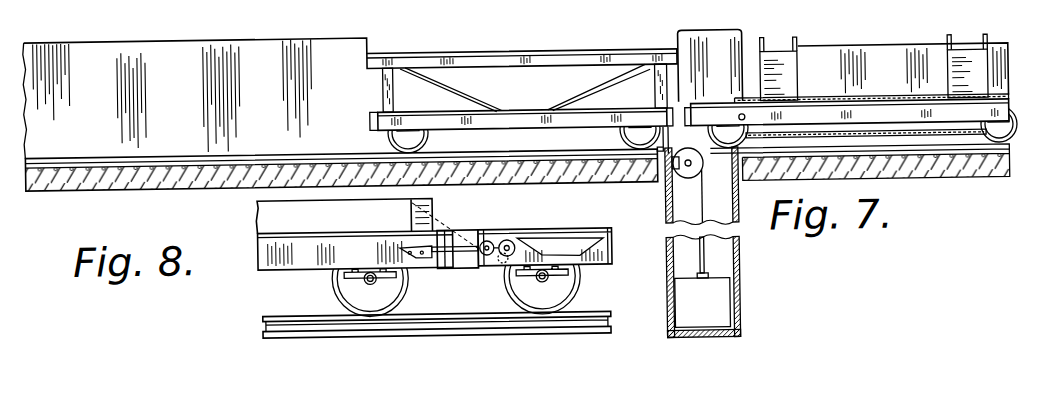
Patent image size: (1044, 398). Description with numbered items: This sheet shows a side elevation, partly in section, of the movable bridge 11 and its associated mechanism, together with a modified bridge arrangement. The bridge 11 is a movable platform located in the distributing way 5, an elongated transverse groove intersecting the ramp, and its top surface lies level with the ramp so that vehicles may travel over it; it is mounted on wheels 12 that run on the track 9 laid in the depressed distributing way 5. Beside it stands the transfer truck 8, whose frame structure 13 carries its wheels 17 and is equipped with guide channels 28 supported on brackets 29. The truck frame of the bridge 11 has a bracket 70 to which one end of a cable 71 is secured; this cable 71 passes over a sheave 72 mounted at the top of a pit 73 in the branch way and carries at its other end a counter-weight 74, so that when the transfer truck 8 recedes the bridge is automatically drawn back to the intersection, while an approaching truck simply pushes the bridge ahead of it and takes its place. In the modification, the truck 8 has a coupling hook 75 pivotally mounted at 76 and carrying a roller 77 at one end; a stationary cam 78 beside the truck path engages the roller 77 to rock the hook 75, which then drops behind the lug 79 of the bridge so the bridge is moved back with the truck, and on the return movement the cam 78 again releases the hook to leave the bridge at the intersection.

In FIG. 7, the distributing way 5 is at (196, 98).
In FIG. 7, the track 9 is at (324, 143).
In FIG. 8, the track 9 is at (276, 320).
In FIG. 7, the movable bridge 11 is at (536, 59).
In FIG. 8, the movable bridge 11 is at (262, 258).
In FIG. 7, the wheels 12 is at (428, 141).
In FIG. 8, the wheels 12 is at (349, 295).
In FIG. 7, the wheels 17 is at (1004, 147).
In FIG. 7, the bracket 70 is at (667, 140).
In FIG. 7, the frame structure 13 is at (866, 117).
In FIG. 7, the transfer truck 8 is at (806, 63).
In FIG. 8, the transfer truck 8 is at (591, 273).
In FIG. 7, the guide channels 28 is at (794, 31).
In FIG. 7, the brackets 29 is at (760, 64).
In FIG. 7, the cable 71 is at (728, 190).
In FIG. 7, the sheave 72 is at (681, 181).
In FIG. 7, the pit 73 is at (704, 267).
In FIG. 7, the counter-weight 74 is at (708, 311).
In FIG. 8, the lug 79 is at (416, 268).
In FIG. 8, the coupling hook 75 is at (459, 262).
In FIG. 8, the pivot 76 is at (484, 248).
In FIG. 8, the roller 77 is at (507, 247).
In FIG. 8, the stationary cam 78 is at (551, 250).